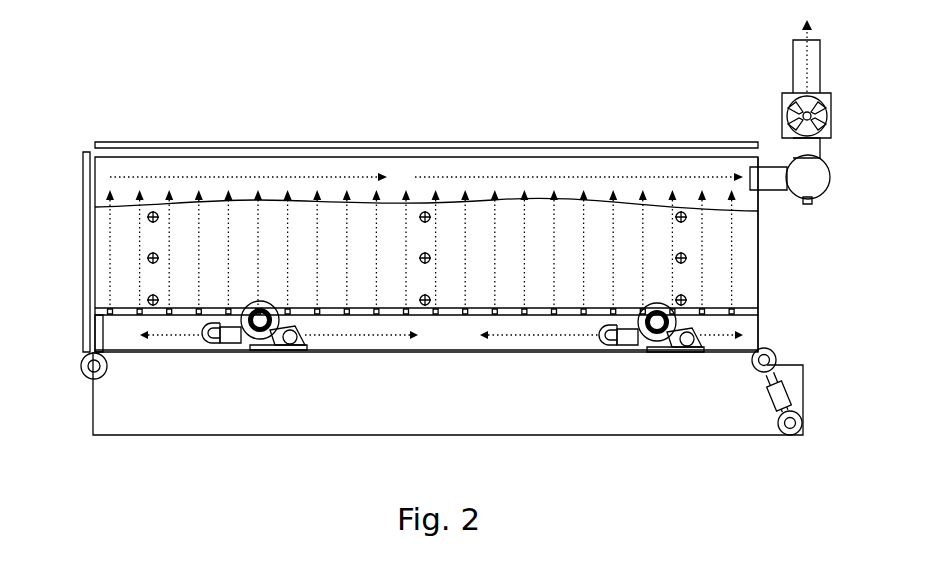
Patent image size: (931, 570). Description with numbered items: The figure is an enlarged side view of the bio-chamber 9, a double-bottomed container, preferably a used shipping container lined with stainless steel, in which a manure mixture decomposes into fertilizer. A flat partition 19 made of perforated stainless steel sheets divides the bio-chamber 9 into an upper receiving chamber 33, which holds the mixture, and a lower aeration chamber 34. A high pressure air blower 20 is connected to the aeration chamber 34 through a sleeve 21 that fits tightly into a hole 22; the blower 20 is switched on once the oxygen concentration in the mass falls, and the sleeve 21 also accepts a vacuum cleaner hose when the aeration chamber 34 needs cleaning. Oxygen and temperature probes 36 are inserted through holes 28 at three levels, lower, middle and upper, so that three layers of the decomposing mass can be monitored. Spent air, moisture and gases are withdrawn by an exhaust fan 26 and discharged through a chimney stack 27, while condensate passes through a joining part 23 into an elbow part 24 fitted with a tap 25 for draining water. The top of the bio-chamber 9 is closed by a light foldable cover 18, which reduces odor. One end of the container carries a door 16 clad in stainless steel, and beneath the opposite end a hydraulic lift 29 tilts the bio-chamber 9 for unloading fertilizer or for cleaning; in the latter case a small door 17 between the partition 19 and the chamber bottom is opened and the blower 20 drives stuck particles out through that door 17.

The bio-chamber 9 is at (115, 162).
The door 16 is at (85, 253).
The small door 17 is at (100, 327).
The cover 18 is at (273, 146).
The flat partition 19 is at (327, 308).
The high pressure air blower 20 is at (272, 340).
The sleeve 21 is at (230, 343).
The hole 22 is at (208, 343).
The joining part 23 is at (773, 176).
The elbow part 24 is at (820, 177).
The tap 25 is at (808, 205).
The exhaust fan 26 is at (832, 127).
The chimney stack 27 is at (812, 55).
The holes 28 is at (148, 258).
The hydraulic lift 29 is at (780, 392).
The receiving chamber 33 is at (745, 240).
The aeration chamber 34 is at (750, 325).
The oxygen and temperature probes 36 is at (158, 219).